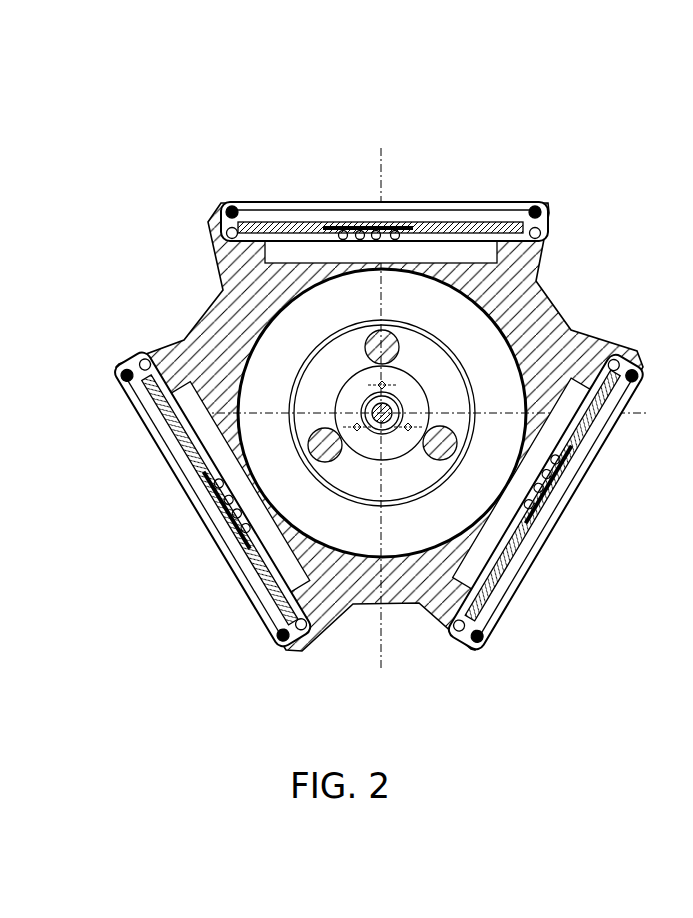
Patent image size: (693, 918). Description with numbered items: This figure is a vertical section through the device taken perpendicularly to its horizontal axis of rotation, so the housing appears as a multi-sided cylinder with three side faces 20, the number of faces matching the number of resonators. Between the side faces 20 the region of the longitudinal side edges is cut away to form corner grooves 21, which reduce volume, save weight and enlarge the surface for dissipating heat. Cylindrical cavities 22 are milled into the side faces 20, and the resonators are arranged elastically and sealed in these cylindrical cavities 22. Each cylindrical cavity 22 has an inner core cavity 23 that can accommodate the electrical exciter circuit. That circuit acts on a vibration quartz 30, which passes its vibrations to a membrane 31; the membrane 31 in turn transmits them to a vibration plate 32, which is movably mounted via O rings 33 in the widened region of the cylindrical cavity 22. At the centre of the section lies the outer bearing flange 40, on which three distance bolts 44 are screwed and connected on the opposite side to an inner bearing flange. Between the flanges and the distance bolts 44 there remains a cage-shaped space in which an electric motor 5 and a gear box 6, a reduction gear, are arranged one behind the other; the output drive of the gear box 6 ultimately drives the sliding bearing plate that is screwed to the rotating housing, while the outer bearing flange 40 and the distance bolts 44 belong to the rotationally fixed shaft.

The electric motor 5 is at (391, 447).
The gear box 6 is at (382, 407).
The side faces 20 is at (166, 531).
The corner grooves 21 is at (352, 620).
The cylindrical cavities 22 is at (172, 490).
The inner core cavity 23 is at (222, 541).
The vibration quartz 30 is at (344, 169).
The membrane 31 is at (363, 157).
The vibration plate 32 is at (384, 142).
The O rings 33 is at (189, 146).
The outer bearing flange 40 is at (323, 377).
The distance bolts 44 is at (399, 346).